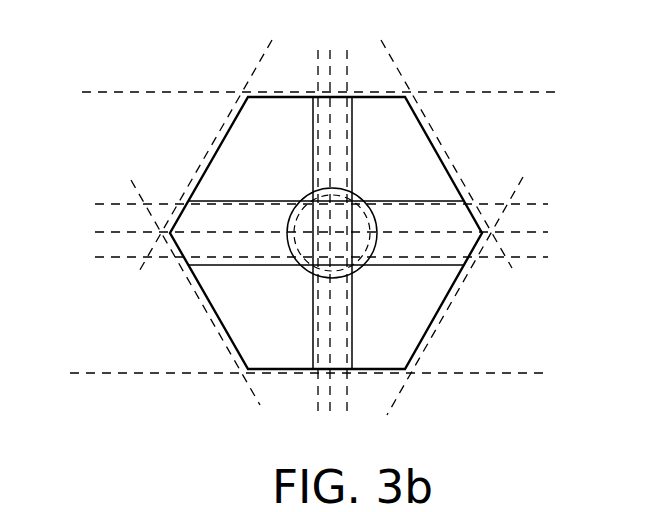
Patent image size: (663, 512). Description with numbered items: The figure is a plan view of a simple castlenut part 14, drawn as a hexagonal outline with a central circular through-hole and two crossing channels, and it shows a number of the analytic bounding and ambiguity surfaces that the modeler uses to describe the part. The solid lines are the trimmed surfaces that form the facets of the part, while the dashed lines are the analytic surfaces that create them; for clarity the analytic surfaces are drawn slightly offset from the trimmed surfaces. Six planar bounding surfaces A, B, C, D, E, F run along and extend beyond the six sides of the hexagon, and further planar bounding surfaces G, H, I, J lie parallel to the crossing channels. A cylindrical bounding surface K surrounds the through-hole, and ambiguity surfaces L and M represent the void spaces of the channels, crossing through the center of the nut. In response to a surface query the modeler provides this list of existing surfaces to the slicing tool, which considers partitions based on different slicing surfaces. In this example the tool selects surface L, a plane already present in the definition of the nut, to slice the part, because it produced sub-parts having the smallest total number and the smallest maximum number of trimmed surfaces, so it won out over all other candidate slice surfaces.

The castlenut part 14 is at (435, 173).
The cylindrical bounding surface K is at (355, 204).
The planar bounding surface A is at (309, 92).
The planar bounding surface B is at (197, 172).
The planar bounding surface C is at (195, 307).
The planar bounding surface D is at (319, 374).
The planar bounding surface E is at (453, 312).
The planar bounding surface F is at (452, 169).
The planar bounding surface G is at (347, 219).
The planar bounding surface H is at (317, 219).
The ambiguity surface M is at (328, 249).
The planar bounding surface I is at (312, 205).
The ambiguity surface L is at (313, 231).
The planar bounding surface J is at (312, 258).